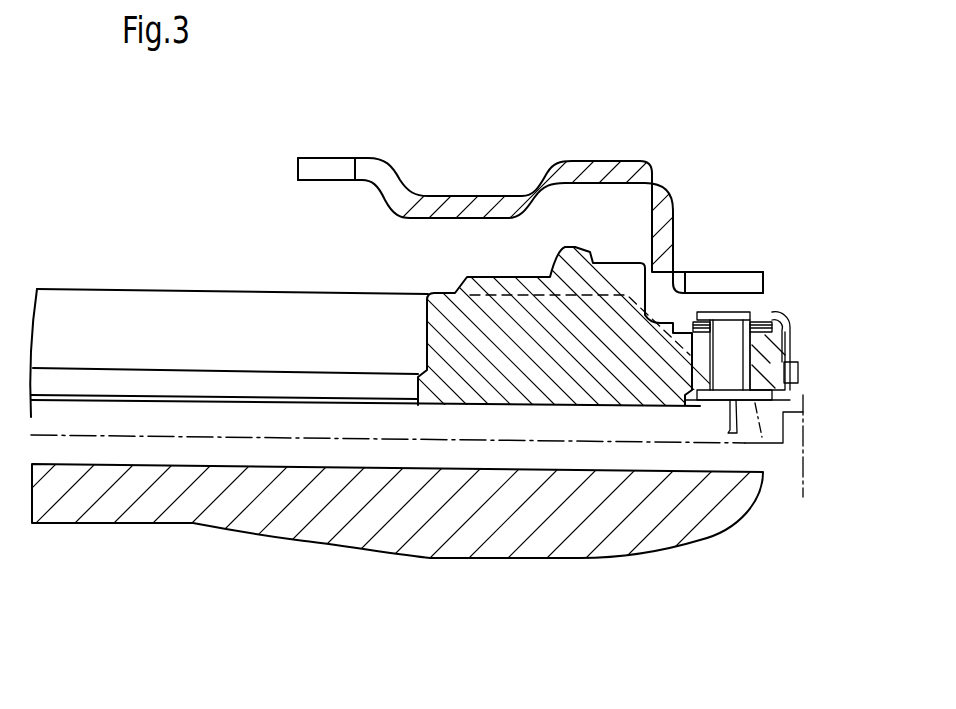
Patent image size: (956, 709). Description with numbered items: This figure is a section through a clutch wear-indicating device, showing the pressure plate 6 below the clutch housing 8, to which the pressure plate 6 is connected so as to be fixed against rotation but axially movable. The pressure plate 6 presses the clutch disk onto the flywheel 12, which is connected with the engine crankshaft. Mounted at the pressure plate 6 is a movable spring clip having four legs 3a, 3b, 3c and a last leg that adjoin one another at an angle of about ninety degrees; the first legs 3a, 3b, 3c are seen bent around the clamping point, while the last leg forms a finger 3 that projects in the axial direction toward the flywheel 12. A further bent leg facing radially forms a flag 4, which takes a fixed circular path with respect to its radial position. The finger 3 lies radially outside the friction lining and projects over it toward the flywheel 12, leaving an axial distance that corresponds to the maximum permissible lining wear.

The finger 3 is at (733, 433).
The leg of spring clip 3a is at (772, 312).
The leg of spring clip 3b is at (800, 316).
The leg of spring clip 3c is at (800, 363).
The flag 4 is at (798, 355).
The pressure plate 6 is at (440, 297).
The clutch housing 8 is at (644, 163).
The flywheel 12 is at (437, 547).